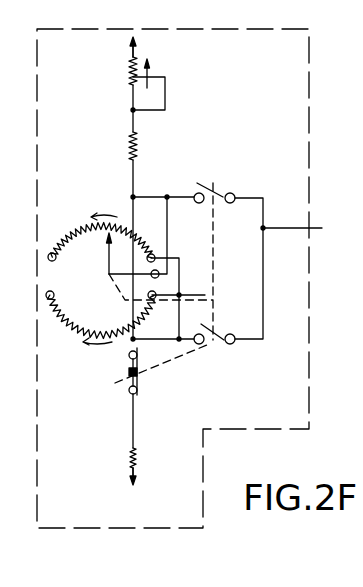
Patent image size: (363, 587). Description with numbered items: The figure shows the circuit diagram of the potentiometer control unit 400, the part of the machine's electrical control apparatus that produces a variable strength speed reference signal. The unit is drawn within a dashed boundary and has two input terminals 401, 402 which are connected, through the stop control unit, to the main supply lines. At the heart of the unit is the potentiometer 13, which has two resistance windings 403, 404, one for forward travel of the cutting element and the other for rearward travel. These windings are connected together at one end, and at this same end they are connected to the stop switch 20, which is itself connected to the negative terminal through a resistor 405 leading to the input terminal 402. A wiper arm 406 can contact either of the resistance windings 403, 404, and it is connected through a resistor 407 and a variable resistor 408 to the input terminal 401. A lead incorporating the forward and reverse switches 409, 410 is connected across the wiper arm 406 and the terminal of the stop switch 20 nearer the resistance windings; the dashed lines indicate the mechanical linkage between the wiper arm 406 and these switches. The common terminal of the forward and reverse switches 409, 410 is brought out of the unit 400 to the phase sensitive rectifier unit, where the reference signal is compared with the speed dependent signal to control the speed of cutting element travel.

The potentiometer control unit 400 is at (311, 323).
The input terminal 401 is at (158, 45).
The input terminal 402 is at (152, 486).
The resistance winding 403 is at (65, 237).
The resistance winding 404 is at (69, 332).
The resistor 405 is at (128, 455).
The wiper arm 406 is at (109, 257).
The resistor 407 is at (140, 147).
The variable resistor 408 is at (131, 73).
The forward switch 409 is at (218, 346).
The reverse switch 410 is at (220, 188).
The potentiometer 13 is at (96, 297).
The stop switch 20 is at (148, 373).